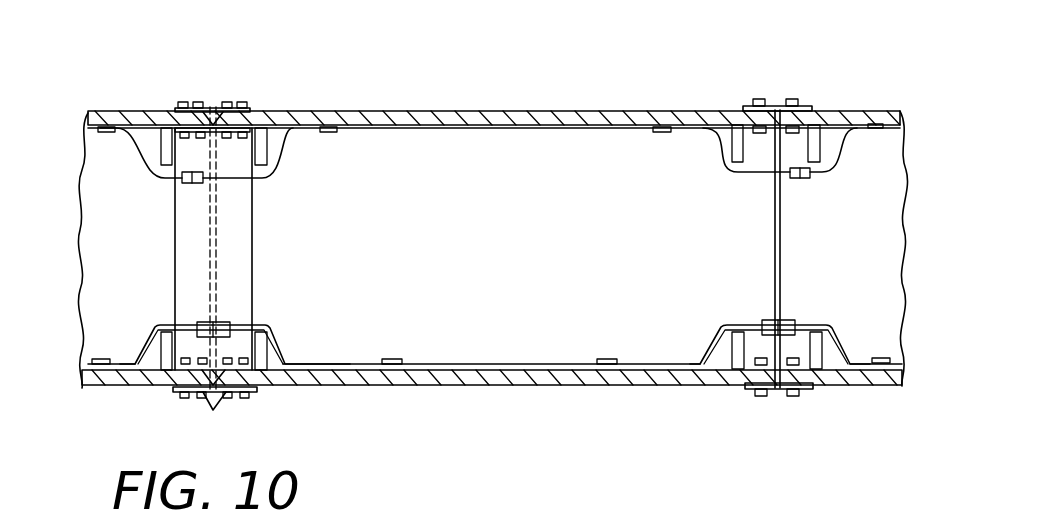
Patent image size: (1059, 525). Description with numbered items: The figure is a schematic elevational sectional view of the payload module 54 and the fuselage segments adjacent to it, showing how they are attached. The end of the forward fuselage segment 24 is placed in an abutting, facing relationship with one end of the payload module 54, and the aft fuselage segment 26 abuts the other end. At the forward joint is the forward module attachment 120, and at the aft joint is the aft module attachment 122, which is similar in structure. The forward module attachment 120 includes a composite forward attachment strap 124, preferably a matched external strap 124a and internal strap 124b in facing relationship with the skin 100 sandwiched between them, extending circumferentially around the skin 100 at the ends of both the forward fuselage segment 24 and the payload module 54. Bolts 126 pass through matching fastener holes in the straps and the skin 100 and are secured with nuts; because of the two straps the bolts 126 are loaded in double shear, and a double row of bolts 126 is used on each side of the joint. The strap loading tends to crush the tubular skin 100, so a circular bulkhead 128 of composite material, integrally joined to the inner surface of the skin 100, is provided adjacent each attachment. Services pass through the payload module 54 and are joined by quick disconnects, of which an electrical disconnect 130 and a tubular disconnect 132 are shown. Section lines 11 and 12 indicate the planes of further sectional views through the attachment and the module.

The skin 100 is at (93, 111).
The forward fuselage segment 24 is at (80, 388).
The aft fuselage segment 26 is at (870, 386).
The payload module 54 is at (545, 387).
The section line 11- 11 is at (256, 437).
The section line 12- 12 is at (459, 168).
The forward module attachment 120 is at (233, 90).
The aft module attachment 122 is at (787, 90).
The forward attachment strap 124 is at (173, 388).
The external strap 124a is at (175, 112).
The internal strap 124b is at (177, 129).
The bolts 126 is at (219, 108).
The circular bulkhead 128 is at (268, 348).
The electrical disconnect 130 is at (183, 183).
The tubular disconnect 132 is at (200, 323).